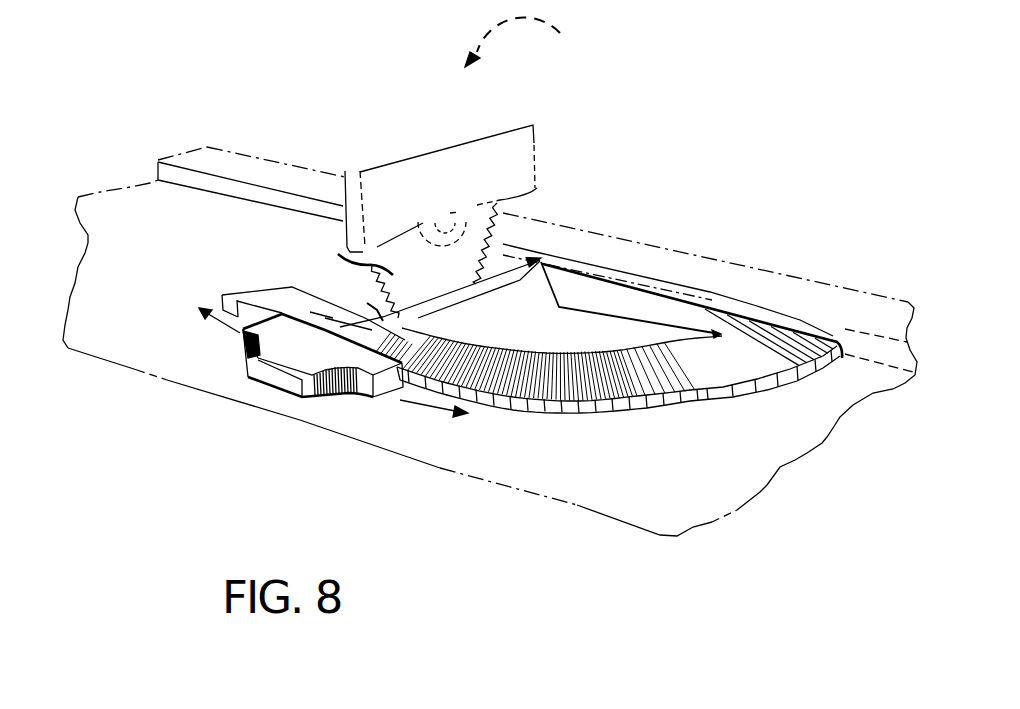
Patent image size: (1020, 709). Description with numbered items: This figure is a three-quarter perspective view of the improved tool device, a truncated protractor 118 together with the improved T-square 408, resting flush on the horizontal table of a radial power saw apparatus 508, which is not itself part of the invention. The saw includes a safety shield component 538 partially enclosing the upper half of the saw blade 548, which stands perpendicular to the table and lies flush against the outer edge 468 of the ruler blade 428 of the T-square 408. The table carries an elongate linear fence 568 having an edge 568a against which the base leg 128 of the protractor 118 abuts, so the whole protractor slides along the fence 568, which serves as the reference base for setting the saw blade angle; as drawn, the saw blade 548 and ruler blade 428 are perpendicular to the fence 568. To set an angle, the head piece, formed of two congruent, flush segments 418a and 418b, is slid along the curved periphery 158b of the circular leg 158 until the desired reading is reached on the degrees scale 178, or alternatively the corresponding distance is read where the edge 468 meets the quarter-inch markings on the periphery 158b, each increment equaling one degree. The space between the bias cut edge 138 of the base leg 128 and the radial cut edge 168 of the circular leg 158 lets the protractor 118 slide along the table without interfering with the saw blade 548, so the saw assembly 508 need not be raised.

The protractor 118 is at (710, 415).
The base leg 128 is at (647, 303).
The bias cut edge 138 is at (553, 295).
The circular leg 158 is at (773, 358).
The periphery 158b is at (610, 412).
The radial cut edge 168 is at (262, 290).
The degrees scale 178 is at (717, 368).
The T-square 408 is at (245, 394).
The head piece segment 418a is at (312, 357).
The head piece segment 418b is at (336, 393).
The ruler blade 428 is at (487, 283).
The outer edge 468 is at (367, 303).
The radial power saw apparatus 508 is at (530, 46).
The safety shield component 538 is at (537, 143).
The saw blade 548 is at (338, 254).
The fence 568 is at (807, 300).
The edge 568a is at (887, 350).